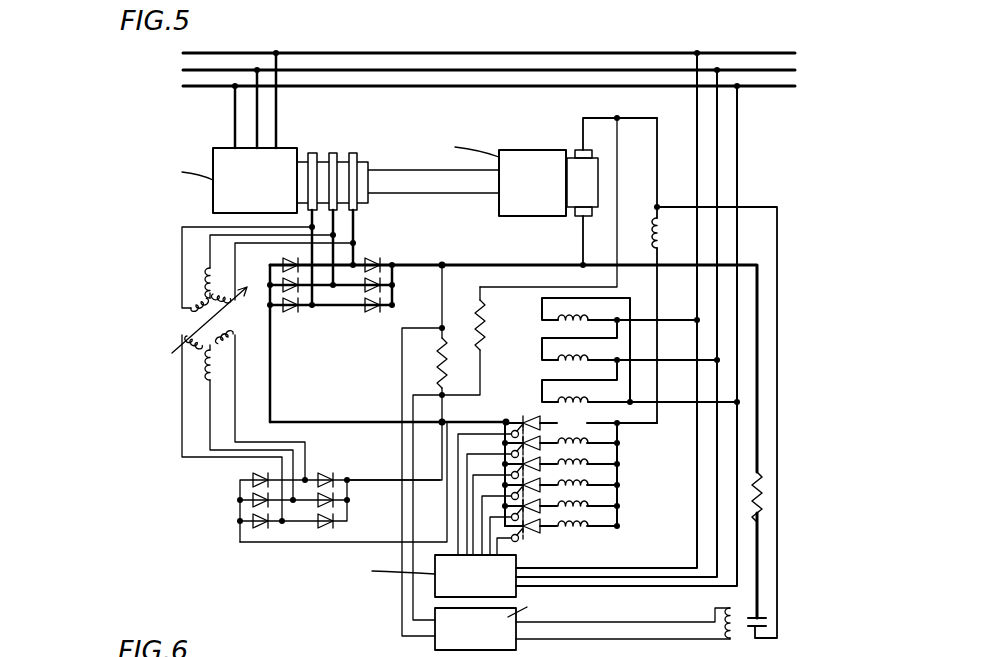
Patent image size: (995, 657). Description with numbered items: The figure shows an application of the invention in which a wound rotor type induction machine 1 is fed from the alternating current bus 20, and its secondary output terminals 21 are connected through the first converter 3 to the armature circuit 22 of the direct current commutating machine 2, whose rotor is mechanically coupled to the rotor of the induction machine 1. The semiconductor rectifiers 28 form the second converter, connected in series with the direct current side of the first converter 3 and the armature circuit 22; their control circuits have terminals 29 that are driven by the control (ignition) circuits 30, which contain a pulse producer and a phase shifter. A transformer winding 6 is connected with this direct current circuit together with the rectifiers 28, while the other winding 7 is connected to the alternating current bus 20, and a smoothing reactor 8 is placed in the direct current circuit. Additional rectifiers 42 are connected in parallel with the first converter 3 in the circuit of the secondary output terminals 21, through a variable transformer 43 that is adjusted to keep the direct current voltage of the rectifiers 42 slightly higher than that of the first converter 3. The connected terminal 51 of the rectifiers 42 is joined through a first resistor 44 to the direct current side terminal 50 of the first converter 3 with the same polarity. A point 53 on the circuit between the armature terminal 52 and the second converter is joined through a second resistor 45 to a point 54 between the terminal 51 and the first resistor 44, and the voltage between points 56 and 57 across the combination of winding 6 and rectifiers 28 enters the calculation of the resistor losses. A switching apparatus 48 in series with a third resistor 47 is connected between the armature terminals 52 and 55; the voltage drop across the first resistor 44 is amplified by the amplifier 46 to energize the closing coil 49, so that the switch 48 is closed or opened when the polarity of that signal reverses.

The wound rotor type induction machine 1 is at (166, 180).
The direct current commutating machine 2 is at (467, 163).
The first converter 3 is at (340, 340).
The winding of transformer 6 is at (586, 529).
The other winding of transformer 7 is at (556, 322).
The smoothing device or reactor 8 is at (660, 230).
The alternating current bus 20 is at (450, 86).
The secondary output terminals 21 is at (314, 152).
The armature circuit 22 is at (582, 183).
The semiconductor rectifiers 28 is at (559, 531).
The terminals of control circuits 29 is at (541, 528).
The control (ignition) circuits 30 is at (308, 578).
The rectifiers 42 is at (321, 479).
The variable transformer 43 is at (192, 325).
The first resistor 44 is at (445, 356).
The second resistor 45 is at (463, 338).
The amplifier 46 is at (582, 626).
The third resistor 47 is at (760, 497).
The switching apparatus 48 is at (750, 629).
The closing coil 49 is at (727, 618).
The D.C. side terminal of first converter 50 is at (443, 265).
The connected terminal of rectifiers 51 is at (349, 483).
The terminal for armature circuit 52 is at (583, 149).
The point 53 is at (618, 118).
The point 54 is at (445, 420).
The terminal of armature circuit 55 is at (585, 265).
The point 56 is at (508, 421).
The point 57 is at (619, 425).